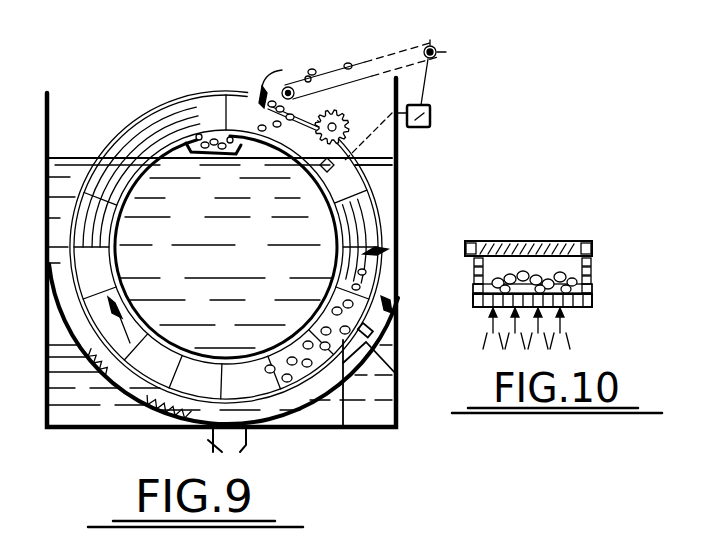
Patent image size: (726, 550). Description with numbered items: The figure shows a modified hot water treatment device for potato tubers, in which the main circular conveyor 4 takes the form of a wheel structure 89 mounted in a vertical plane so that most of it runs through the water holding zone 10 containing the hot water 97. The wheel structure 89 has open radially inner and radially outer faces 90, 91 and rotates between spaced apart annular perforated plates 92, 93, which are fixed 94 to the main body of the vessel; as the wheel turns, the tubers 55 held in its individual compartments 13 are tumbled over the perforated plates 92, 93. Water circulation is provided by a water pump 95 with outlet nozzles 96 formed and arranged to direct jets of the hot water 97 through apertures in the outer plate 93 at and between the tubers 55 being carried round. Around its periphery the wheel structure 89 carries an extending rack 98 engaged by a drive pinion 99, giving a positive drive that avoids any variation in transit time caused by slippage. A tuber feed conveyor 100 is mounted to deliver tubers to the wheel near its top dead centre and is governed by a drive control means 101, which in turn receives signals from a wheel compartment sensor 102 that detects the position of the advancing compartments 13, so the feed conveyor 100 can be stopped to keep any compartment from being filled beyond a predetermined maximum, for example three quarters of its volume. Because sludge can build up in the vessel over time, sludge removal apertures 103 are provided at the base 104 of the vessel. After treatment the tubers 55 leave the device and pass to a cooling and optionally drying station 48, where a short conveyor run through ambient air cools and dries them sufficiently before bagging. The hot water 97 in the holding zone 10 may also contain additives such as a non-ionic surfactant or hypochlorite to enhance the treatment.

In FIG. 9, the main circular conveyor 4 is at (388, 251).
In FIG. 9, the water holding zone 10 is at (182, 163).
In FIG. 9, the compartments 13 is at (103, 180).
In FIG. 9, the cooling and drying station 48 is at (227, 157).
In FIG. 10, the tubers 55 is at (570, 277).
In FIG. 9, the wheel structure 89 is at (333, 208).
In FIG. 10, the radially inner face 90 is at (488, 292).
In FIG. 10, the radially outer face 91 is at (518, 258).
In FIG. 9, the annular perforated plate 92 is at (152, 163).
In FIG. 10, the annular perforated plate 92 is at (577, 305).
In FIG. 9, the outer annular perforated plate 93 is at (383, 263).
In FIG. 10, the outer annular perforated plate 93 is at (553, 242).
In FIG. 9, the fixing 94 is at (343, 428).
In FIG. 9, the water pump 95 is at (397, 374).
In FIG. 9, the outlet nozzles 96 is at (388, 312).
In FIG. 9, the hot water 97 is at (382, 284).
In FIG. 9, the peripheral rack 98 is at (358, 145).
In FIG. 9, the drive pinion 99 is at (331, 110).
In FIG. 9, the tuber feed conveyor 100 is at (362, 62).
In FIG. 9, the drive control means 101 is at (430, 110).
In FIG. 9, the wheel compartment sensor 102 is at (398, 172).
In FIG. 9, the sludge removal apertures 103 is at (214, 452).
In FIG. 9, the base of the vessel 104 is at (178, 430).